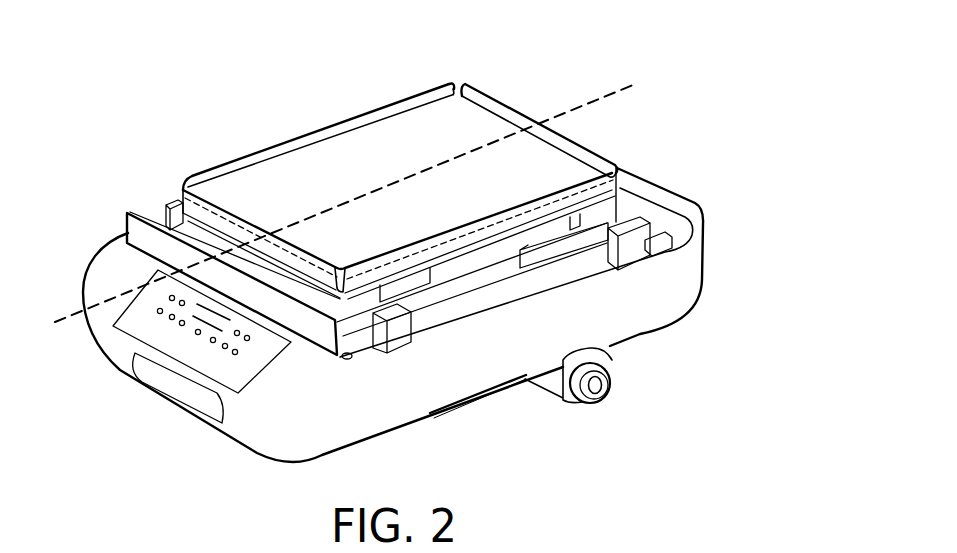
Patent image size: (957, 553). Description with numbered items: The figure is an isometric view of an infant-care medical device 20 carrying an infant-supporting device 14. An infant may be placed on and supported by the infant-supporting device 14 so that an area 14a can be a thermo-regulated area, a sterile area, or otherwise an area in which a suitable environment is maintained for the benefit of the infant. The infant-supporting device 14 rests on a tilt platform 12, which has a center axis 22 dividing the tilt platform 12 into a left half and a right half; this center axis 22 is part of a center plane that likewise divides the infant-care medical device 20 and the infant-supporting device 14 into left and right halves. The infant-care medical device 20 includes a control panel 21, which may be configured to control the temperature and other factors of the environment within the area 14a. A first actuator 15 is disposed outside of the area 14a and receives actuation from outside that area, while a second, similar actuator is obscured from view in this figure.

The tilt platform 12 is at (625, 210).
The infant-supporting device 14 is at (391, 183).
The area 14a is at (383, 145).
The first actuator 15 is at (610, 396).
The infant-care medical device 20 is at (258, 453).
The control panel 21 is at (207, 343).
The center axis 22 is at (602, 97).